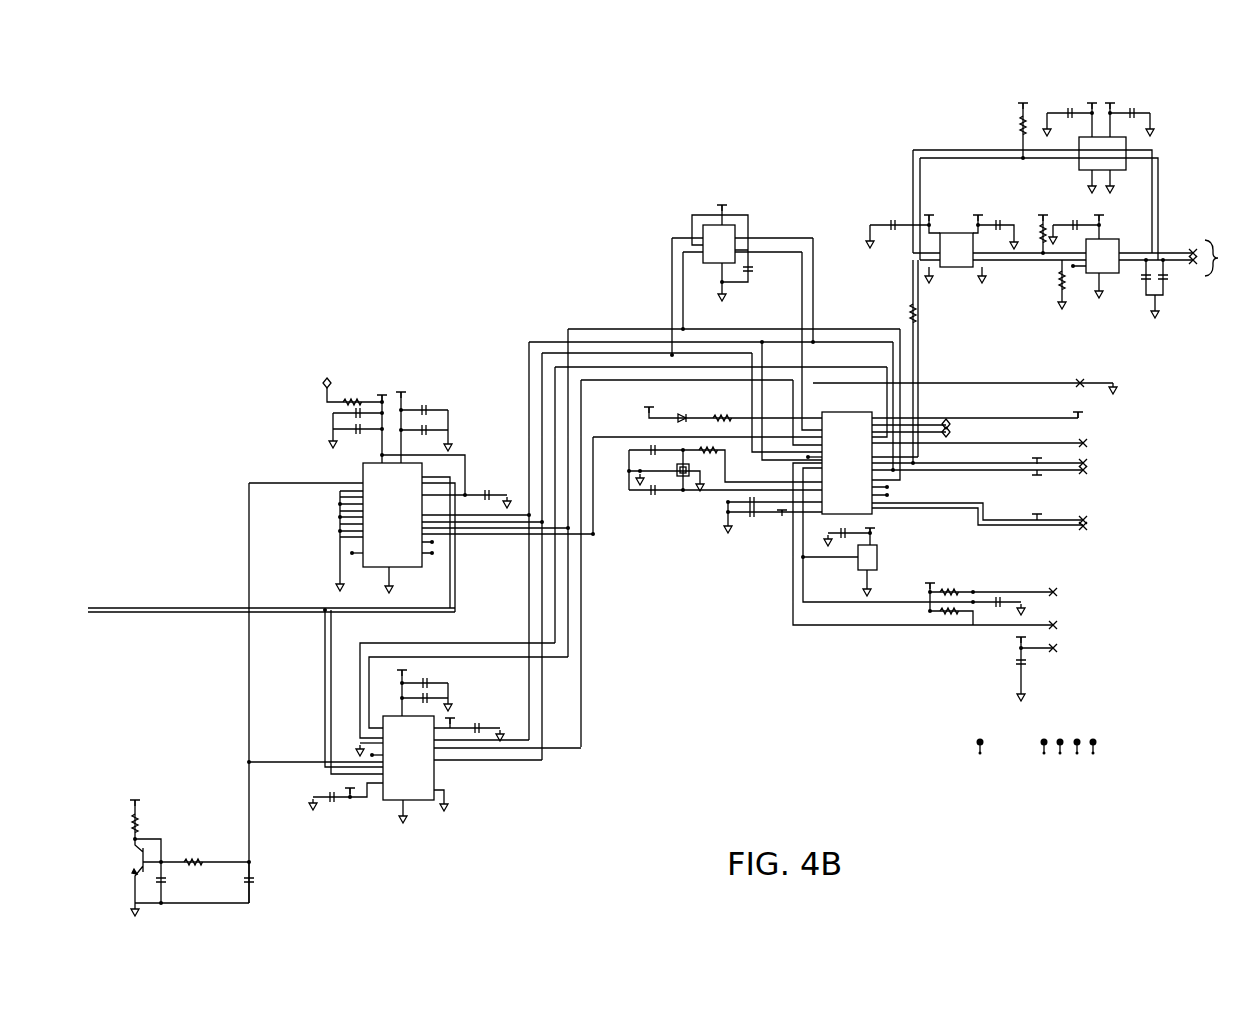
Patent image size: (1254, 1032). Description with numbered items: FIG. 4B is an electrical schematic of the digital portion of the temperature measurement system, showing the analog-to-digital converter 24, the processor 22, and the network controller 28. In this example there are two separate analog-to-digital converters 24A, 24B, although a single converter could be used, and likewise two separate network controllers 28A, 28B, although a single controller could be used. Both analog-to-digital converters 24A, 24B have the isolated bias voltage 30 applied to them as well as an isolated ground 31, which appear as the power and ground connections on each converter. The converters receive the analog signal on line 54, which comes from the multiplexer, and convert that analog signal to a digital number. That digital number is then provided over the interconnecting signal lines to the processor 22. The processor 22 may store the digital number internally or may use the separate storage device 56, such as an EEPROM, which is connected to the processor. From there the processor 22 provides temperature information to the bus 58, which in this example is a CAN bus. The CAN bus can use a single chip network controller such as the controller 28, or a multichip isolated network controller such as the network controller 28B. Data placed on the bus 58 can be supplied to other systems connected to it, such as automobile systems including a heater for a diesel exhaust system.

The processor 22 is at (858, 512).
The analog-to-digital converter 24 is at (296, 384).
The analog-to-digital converter 24A is at (370, 470).
The analog-to-digital converter 24B is at (430, 775).
The network controller 28 is at (970, 71).
The network controller 28A is at (1102, 108).
The network controller 28B is at (1013, 268).
The isolated bias voltage 30 is at (403, 392).
The isolated ground 31 is at (392, 580).
The line 54 is at (128, 606).
The storage device 56 is at (730, 228).
The bus 58 is at (1226, 258).